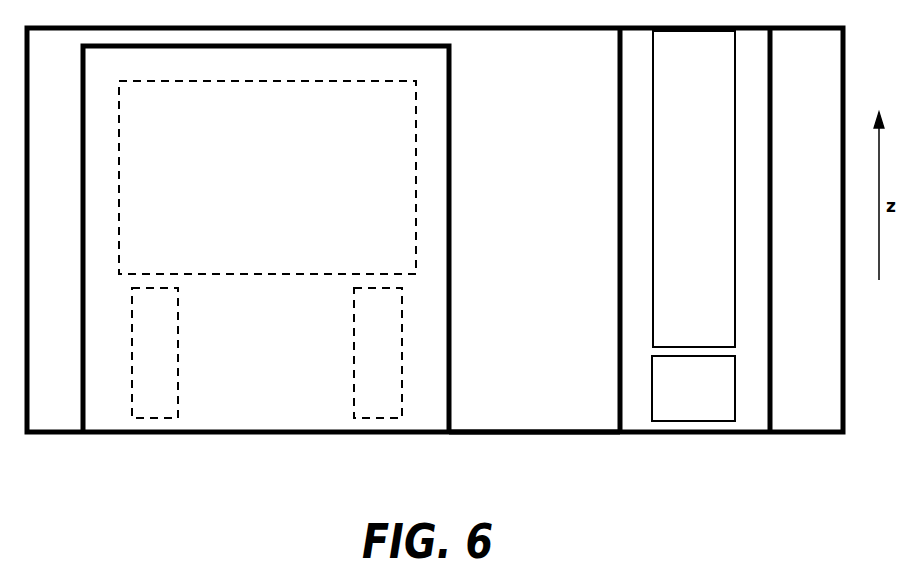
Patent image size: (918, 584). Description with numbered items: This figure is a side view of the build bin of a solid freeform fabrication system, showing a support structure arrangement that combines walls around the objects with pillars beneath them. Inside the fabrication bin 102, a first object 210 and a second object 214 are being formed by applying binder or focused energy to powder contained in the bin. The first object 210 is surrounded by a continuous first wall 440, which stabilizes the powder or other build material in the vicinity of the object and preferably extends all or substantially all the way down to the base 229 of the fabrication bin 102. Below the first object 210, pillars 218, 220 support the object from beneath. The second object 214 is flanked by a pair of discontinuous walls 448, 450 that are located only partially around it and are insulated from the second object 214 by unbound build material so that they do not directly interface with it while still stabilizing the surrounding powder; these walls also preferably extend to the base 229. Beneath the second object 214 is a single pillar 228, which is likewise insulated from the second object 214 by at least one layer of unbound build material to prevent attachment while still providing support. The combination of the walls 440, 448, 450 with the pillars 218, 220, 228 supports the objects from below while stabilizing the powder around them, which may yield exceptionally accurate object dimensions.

The fabrication bin 102 is at (568, 95).
The first object 210 is at (290, 187).
The second object 214 is at (716, 197).
The pillar 218 is at (179, 341).
The pillar 220 is at (354, 346).
The single pillar 228 is at (716, 401).
The base 229 is at (502, 408).
The first wall 440 is at (451, 240).
The first discontinuous wall 448 is at (617, 300).
The second discontinuous wall 450 is at (772, 298).